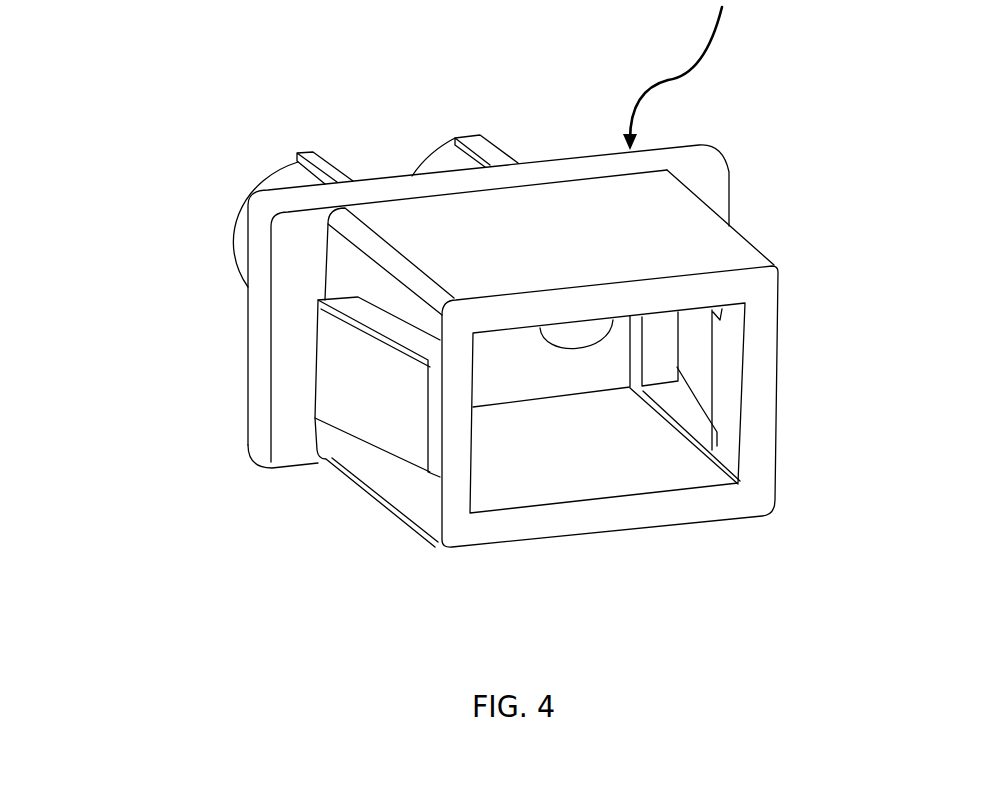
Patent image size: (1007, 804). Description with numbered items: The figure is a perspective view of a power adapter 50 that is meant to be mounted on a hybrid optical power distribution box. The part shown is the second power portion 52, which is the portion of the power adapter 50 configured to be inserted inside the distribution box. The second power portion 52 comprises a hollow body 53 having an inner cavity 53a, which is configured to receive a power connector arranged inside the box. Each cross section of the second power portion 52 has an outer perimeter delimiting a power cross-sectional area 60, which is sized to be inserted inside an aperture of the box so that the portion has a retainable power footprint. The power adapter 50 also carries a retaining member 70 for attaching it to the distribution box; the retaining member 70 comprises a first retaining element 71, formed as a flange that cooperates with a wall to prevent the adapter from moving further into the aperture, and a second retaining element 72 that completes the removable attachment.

The power adapter 50 is at (223, 548).
The second power portion 52 is at (700, 230).
The hollow body 53 is at (488, 267).
The inner cavity 53a is at (540, 423).
The power cross-sectional area 60 is at (747, 413).
The retaining member 70 is at (236, 287).
The first retaining element 71 is at (250, 418).
The second retaining element 72 is at (353, 383).